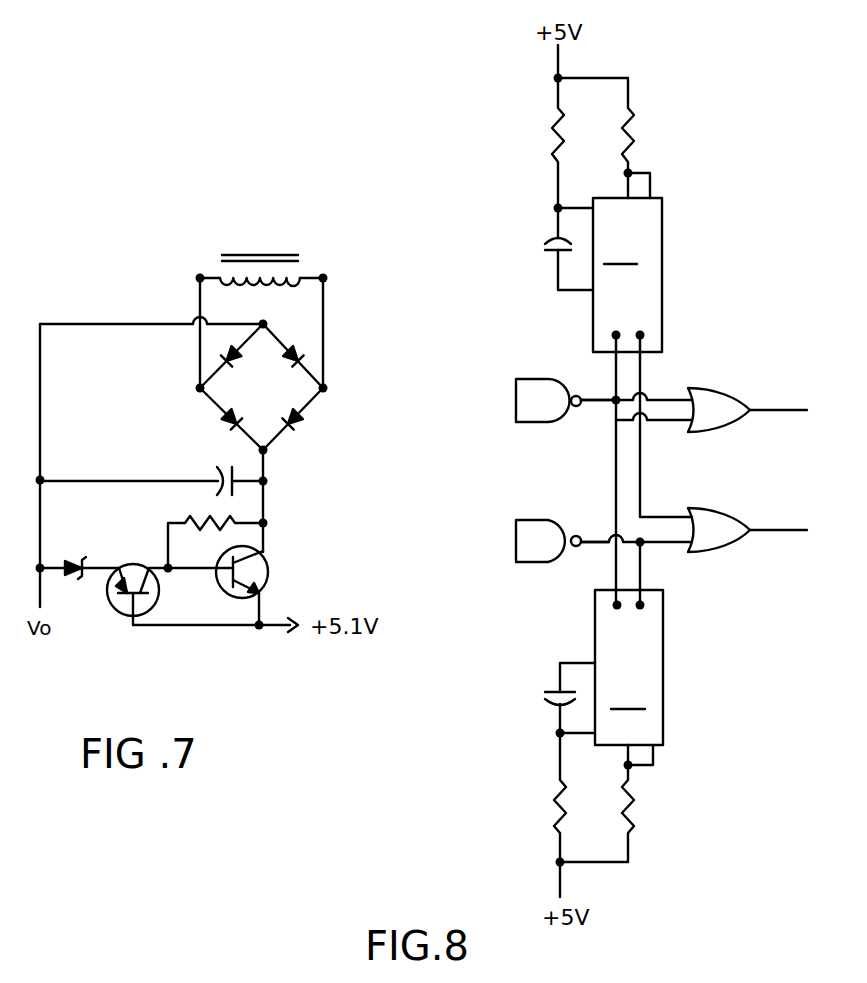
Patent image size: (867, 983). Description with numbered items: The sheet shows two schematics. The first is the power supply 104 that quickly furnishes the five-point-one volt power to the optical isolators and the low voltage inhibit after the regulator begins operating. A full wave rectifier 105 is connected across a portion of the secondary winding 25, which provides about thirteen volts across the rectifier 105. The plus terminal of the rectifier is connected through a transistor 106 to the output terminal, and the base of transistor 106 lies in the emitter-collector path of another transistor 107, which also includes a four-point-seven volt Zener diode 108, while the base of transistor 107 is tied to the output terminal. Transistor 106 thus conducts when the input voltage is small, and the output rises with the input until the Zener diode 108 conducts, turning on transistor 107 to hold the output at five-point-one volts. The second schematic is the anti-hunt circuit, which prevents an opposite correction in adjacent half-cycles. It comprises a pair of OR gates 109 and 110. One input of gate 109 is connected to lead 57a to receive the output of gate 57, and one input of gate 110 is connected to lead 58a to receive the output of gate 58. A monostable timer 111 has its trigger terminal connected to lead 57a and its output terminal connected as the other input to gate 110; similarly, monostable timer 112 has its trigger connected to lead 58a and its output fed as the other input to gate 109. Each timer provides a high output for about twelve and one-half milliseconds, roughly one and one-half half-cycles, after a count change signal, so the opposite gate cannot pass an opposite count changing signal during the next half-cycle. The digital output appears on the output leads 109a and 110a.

In FIG. 7, the plural tap secondary winding 25 is at (233, 251).
In FIG. 7, the power supply 104 is at (297, 490).
In FIG. 7, the full wave rectifier 105 is at (282, 396).
In FIG. 7, the transistor 106 is at (270, 575).
In FIG. 7, the transistor 107 is at (111, 621).
In FIG. 7, the Zener diode 108 is at (65, 560).
In FIG. 8, the gate 57 is at (538, 390).
In FIG. 8, the lead 57a is at (596, 404).
In FIG. 8, the gate 58 is at (539, 522).
In FIG. 8, the lead 58a is at (593, 546).
In FIG. 8, the OR gate 109 is at (718, 392).
In FIG. 8, the output lead 109a is at (773, 408).
In FIG. 8, the OR gate 110 is at (718, 541).
In FIG. 8, the output lead 110a is at (780, 528).
In FIG. 8, the monostable timer 111 is at (655, 245).
In FIG. 8, the monostable timer 112 is at (660, 660).